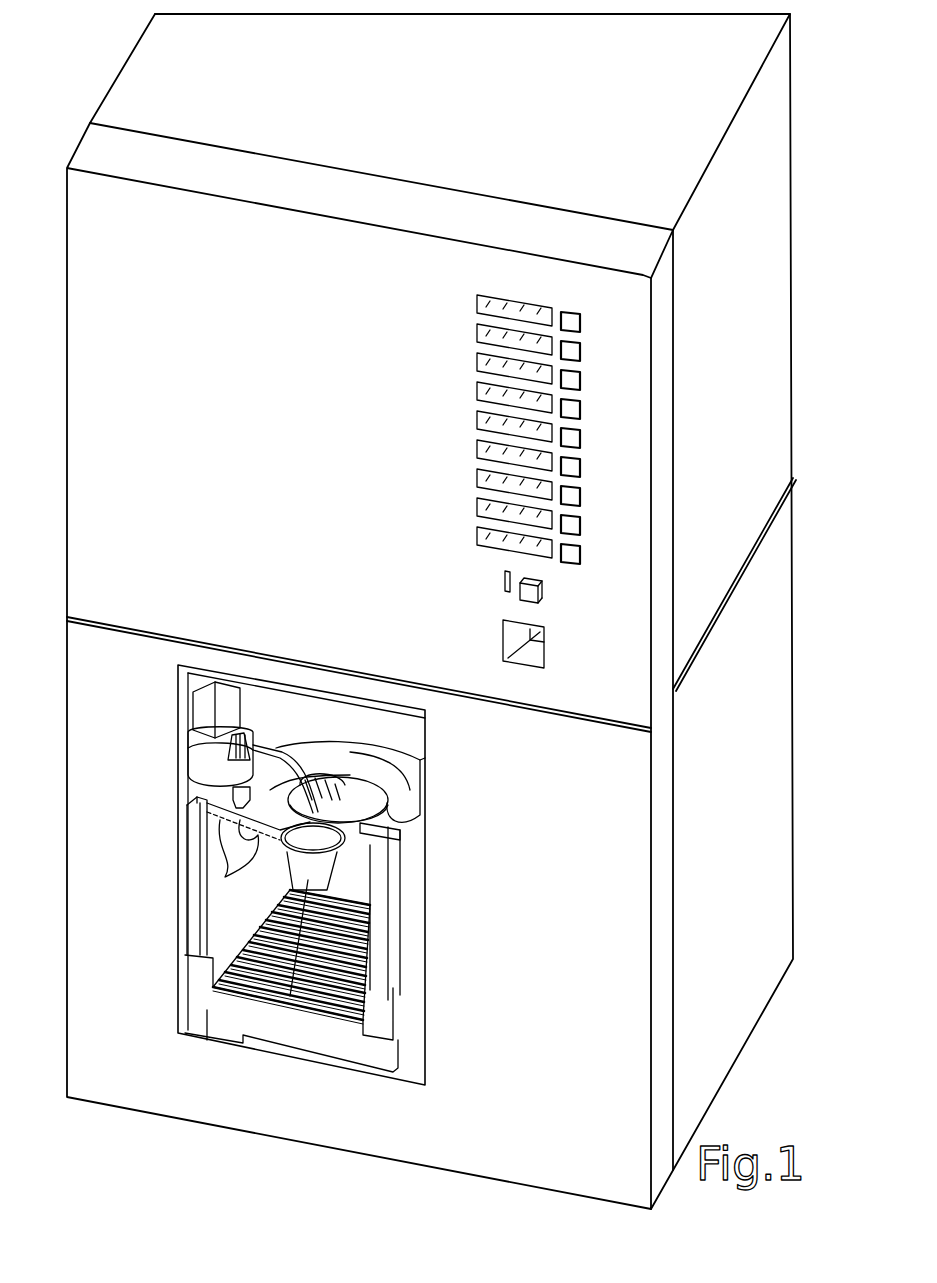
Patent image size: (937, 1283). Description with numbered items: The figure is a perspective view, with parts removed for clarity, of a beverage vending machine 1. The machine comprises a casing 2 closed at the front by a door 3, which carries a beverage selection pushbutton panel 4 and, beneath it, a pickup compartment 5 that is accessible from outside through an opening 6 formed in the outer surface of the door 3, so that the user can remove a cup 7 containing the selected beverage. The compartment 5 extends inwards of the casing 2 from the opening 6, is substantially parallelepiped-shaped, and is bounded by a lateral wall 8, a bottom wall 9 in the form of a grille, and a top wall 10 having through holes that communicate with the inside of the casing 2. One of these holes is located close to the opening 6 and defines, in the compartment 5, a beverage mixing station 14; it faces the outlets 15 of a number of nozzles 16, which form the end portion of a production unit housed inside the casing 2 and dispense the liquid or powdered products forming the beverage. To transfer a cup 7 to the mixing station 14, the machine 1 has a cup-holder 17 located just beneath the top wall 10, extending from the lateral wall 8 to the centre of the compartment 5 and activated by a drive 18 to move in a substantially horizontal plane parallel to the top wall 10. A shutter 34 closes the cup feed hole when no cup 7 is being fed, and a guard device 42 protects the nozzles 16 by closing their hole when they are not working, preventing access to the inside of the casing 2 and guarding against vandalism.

The beverage vending machine 1 is at (335, 371).
The casing 2 is at (763, 243).
The door 3 is at (92, 322).
The beverage selection pushbutton panel 4 is at (585, 445).
The pickup compartment 5 is at (242, 895).
The opening 6 is at (225, 923).
The cup 7 is at (362, 967).
The lateral wall 8 is at (390, 890).
The bottom wall 9 is at (318, 995).
The top wall 10 is at (397, 783).
The beverage mixing station 14 is at (340, 862).
The outlets 15 is at (280, 830).
The nozzles 16 is at (327, 775).
The cup-holder 17 is at (278, 832).
The drive 18 is at (190, 708).
The shutter 34 is at (300, 752).
The guard device 42 is at (362, 802).